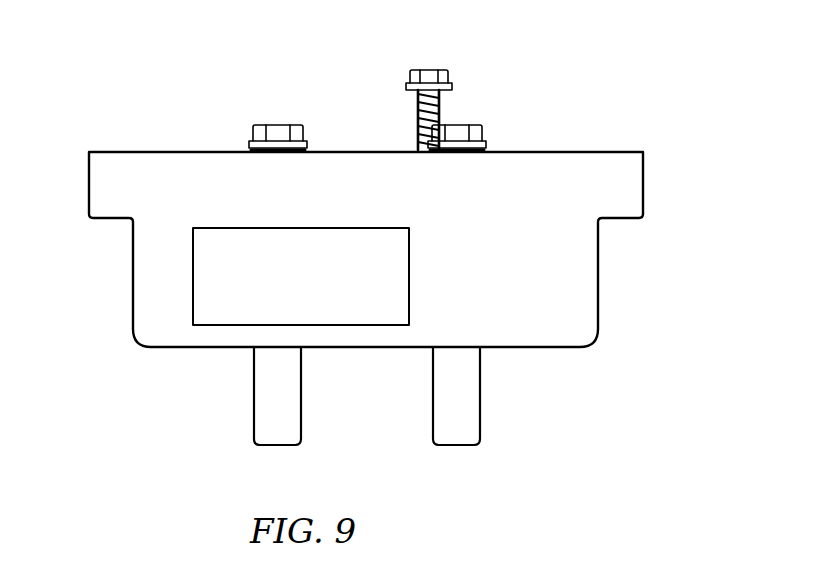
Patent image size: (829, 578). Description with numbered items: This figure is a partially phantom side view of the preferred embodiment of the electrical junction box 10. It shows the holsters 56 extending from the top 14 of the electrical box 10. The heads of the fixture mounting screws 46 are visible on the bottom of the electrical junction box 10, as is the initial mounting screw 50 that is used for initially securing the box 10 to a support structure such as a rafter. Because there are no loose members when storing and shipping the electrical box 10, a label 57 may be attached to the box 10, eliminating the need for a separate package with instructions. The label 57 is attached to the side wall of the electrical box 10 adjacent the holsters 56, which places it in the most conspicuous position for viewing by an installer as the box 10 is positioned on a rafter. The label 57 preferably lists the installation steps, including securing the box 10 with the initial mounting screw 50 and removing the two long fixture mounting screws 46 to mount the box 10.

The electrical junction box 10 is at (643, 281).
The top 14 is at (188, 342).
The fixture mounting screws 46 is at (248, 140).
The initial mounting screw 50 is at (427, 76).
The holsters 56 is at (275, 447).
The label 57 is at (381, 228).